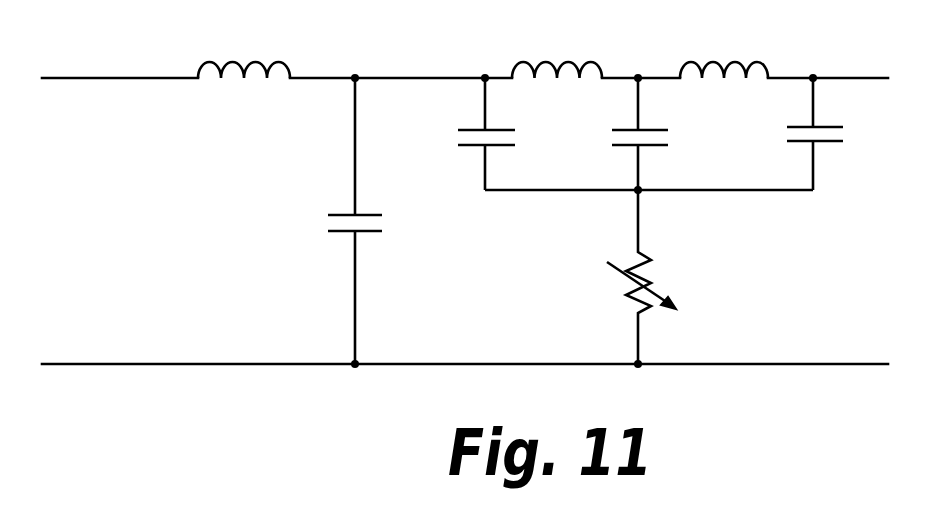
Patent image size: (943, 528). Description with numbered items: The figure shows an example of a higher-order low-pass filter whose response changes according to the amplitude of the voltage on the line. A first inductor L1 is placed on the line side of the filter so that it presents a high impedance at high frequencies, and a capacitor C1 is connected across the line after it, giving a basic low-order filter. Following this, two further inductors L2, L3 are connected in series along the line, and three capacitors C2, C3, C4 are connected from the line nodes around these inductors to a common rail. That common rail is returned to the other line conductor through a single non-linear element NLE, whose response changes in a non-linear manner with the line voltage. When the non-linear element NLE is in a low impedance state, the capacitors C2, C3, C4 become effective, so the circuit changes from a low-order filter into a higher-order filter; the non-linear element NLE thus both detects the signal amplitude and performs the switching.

The inductor L1 is at (244, 52).
The inductor L2 is at (557, 52).
The inductor L3 is at (724, 51).
The capacitor C1 is at (337, 221).
The capacitor C2 is at (473, 134).
The capacitor C3 is at (630, 134).
The capacitor C4 is at (821, 134).
The non-linear element NLE is at (664, 277).